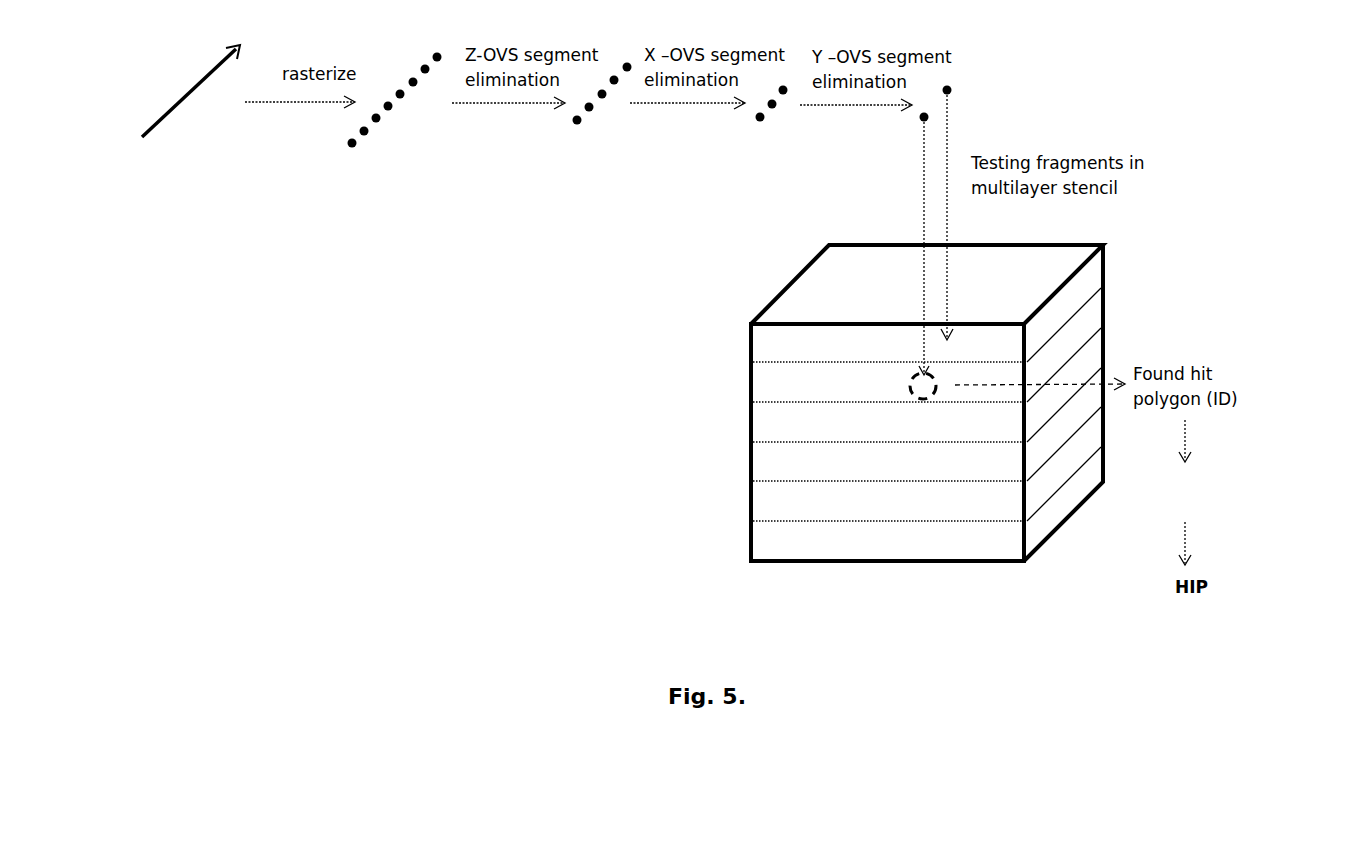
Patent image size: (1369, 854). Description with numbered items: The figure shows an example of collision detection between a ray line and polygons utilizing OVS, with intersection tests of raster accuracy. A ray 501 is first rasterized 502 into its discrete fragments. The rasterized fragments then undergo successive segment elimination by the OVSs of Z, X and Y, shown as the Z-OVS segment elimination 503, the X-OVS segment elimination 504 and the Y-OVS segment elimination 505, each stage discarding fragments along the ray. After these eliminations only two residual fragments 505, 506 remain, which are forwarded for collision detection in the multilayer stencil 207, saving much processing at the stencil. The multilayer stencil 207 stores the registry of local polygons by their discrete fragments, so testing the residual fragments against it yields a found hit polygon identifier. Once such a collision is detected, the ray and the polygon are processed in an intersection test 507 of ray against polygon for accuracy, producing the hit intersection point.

The ray 501 is at (188, 112).
The rasterized ray fragments 502 is at (390, 116).
The fragments after Z-OVS segment elimination 503 is at (596, 117).
The fragments after X-OVS segment elimination 504 is at (769, 123).
The fragment after Y-OVS segment elimination 505 is at (912, 128).
The fragment after Y-OVS segment elimination 506 is at (960, 83).
The multilayer stencil 207 is at (1143, 262).
The intersection test ray/polygon 507 is at (1228, 465).